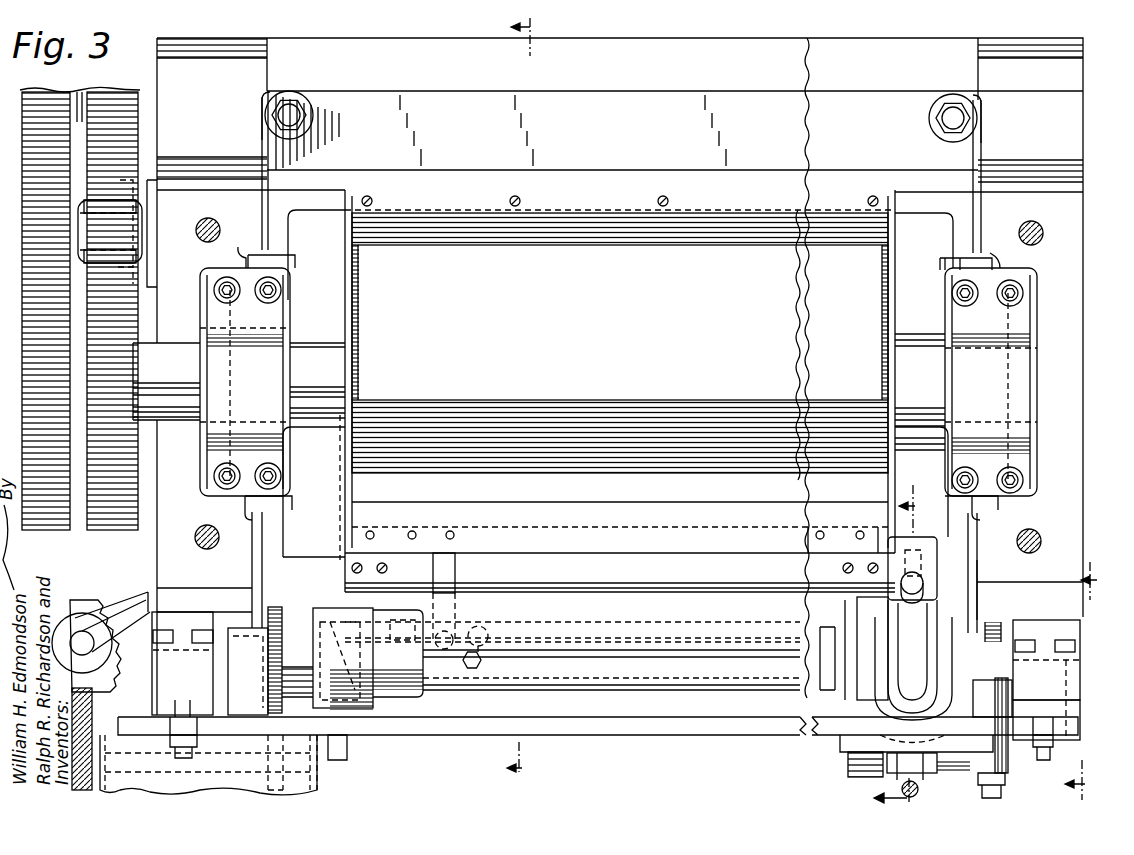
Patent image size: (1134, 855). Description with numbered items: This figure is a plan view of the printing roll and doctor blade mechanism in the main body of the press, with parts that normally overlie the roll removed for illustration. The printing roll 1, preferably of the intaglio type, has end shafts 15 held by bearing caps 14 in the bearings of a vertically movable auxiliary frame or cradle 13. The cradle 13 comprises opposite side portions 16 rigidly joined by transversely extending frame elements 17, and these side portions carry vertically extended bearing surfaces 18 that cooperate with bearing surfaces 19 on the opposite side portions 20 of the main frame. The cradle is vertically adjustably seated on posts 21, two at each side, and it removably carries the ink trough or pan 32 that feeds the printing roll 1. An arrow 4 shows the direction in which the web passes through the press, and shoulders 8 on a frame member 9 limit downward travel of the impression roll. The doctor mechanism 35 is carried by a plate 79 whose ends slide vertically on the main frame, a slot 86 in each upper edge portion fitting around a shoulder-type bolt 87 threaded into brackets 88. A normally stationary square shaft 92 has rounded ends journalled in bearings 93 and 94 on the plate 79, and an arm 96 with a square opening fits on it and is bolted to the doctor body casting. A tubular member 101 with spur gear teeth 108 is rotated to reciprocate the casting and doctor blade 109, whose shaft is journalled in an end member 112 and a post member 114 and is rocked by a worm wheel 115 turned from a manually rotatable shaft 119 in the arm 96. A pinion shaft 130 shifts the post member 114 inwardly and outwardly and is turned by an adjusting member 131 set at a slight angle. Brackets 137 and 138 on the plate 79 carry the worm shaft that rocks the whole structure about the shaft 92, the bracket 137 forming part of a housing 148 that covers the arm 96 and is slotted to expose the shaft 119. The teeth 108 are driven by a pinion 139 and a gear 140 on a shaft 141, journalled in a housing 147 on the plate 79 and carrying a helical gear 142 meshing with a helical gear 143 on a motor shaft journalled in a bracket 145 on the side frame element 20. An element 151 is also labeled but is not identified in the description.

The printing roll 1 is at (618, 370).
The arrow 4 is at (508, 398).
The shoulders 8 is at (1091, 681).
The frame member 9 is at (889, 647).
The auxiliary frame member or cradle 13 is at (292, 249).
The bearing caps 14 is at (258, 379).
The end shafts 15 is at (292, 342).
The side portions 16 is at (280, 519).
The transversely extending frame elements 17 is at (312, 551).
The bearing surfaces 18 is at (286, 263).
The bearing surfaces 19 is at (246, 258).
The side portions of the main frame 20 is at (1067, 493).
The posts 21 is at (292, 112).
The ink trough or pan 32 is at (338, 462).
The doctor mechanism 35 is at (620, 691).
The plate 79 is at (681, 728).
The slot 86 is at (172, 717).
The bolt 87 is at (198, 745).
The brackets 88 is at (1091, 705).
The shaft 92 is at (697, 687).
The bearing 93 is at (242, 628).
The bearing 94 is at (1064, 634).
The arm 96 is at (942, 610).
The tubular member 101 is at (312, 618).
The spur gear teeth 108 is at (277, 607).
The doctor blade 109 is at (620, 508).
The end member 112 is at (333, 559).
The post member 114 is at (457, 578).
The worm wheel 115 is at (922, 553).
The manually rotatable shaft 119 is at (919, 790).
The shaft 130 is at (805, 595).
The adjusting member 131 is at (480, 668).
The bracket 137 is at (1008, 755).
The bracket 138 is at (990, 712).
The pinion 139 is at (318, 771).
The gear 140 is at (338, 792).
The shaft 141 is at (157, 751).
The helical gear 142 is at (93, 698).
The helical gear 143 is at (80, 598).
The bracket 145 is at (130, 593).
The housing 147 is at (208, 765).
The housing 148 is at (847, 757).
The rack 151 is at (128, 529).